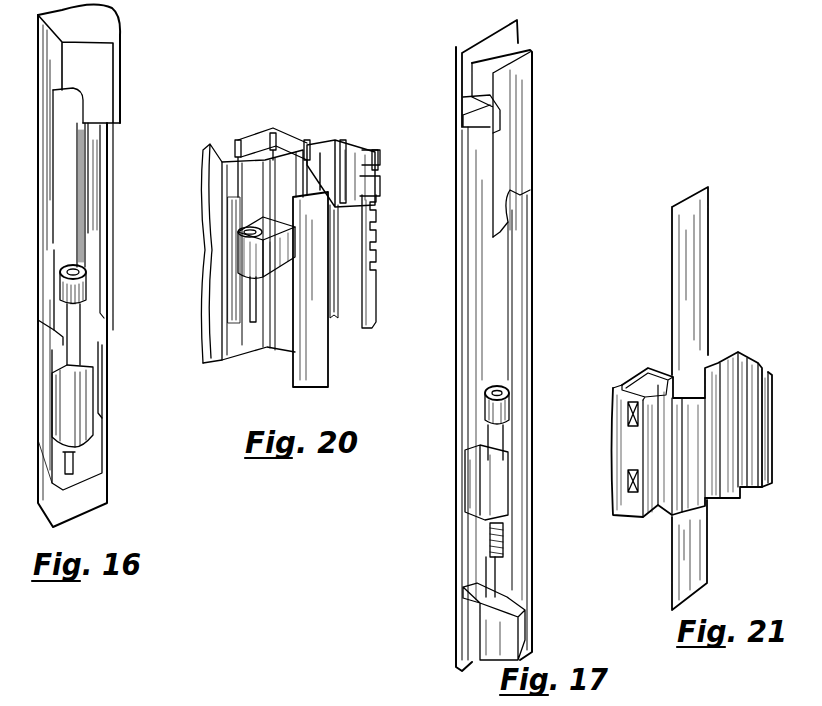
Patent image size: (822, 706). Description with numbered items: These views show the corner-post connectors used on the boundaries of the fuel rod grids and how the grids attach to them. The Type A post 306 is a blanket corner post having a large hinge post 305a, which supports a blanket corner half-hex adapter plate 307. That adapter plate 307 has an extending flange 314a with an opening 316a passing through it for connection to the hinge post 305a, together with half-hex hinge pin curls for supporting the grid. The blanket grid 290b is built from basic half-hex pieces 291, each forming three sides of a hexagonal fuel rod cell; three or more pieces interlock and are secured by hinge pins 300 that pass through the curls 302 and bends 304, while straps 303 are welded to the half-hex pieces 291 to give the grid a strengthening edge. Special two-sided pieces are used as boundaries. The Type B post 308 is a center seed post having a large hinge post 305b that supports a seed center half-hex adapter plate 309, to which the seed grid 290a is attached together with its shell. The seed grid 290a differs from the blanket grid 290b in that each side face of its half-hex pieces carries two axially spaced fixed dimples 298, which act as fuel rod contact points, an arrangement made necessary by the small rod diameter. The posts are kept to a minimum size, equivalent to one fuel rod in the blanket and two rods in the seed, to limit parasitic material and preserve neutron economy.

In FIG. 16, the Type A post 306 is at (87, 169).
In FIG. 16, the large hinge post 305a is at (80, 346).
In FIG. 20, the blanket grid 290b is at (311, 127).
In FIG. 20, the half-hex piece 291 is at (355, 160).
In FIG. 20, the hinge pin 300 is at (381, 158).
In FIG. 20, the curl 302 is at (380, 186).
In FIG. 20, the bend 304 is at (375, 270).
In FIG. 20, the strap 303 is at (318, 348).
In FIG. 20, the extending flange 314a is at (240, 253).
In FIG. 20, the opening 316a is at (242, 228).
In FIG. 20, the blanket corner half-hex adapter plate 307 is at (256, 288).
In FIG. 17, the Type B post 308 is at (490, 297).
In FIG. 17, the large hinge post 305b is at (498, 437).
In FIG. 21, the seed center half-hex adapter plate 309 is at (690, 370).
In FIG. 21, the seed grid 290a is at (737, 507).
In FIG. 21, the fixed dimple 298 is at (628, 412).